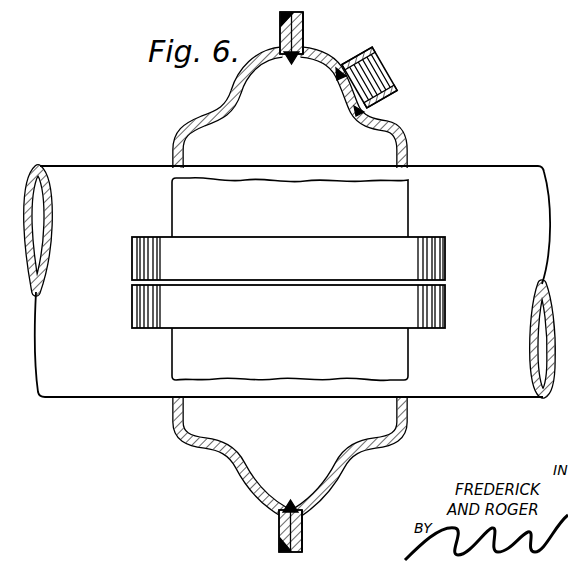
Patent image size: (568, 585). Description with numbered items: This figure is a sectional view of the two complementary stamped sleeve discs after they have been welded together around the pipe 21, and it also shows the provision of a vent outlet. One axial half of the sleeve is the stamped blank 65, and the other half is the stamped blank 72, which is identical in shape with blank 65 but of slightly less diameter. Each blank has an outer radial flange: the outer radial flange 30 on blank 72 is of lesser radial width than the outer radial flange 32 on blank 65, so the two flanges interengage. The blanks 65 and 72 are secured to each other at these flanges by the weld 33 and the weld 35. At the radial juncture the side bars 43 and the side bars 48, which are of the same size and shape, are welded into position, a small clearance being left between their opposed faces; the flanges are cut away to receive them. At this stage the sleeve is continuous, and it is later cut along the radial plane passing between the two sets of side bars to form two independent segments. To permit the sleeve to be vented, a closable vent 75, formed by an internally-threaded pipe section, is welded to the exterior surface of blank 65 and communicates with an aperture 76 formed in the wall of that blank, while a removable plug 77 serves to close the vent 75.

The pipe 21 is at (477, 178).
The outer radial flange 30 is at (280, 43).
The outer radial flange 32 is at (303, 16).
The weld 33 is at (284, 16).
The weld 35 is at (289, 62).
The side bars 43 is at (435, 270).
The side bars 48 is at (433, 325).
The stamped blank 65 is at (403, 128).
The stamped blank 72 is at (228, 105).
The closable vent 75 is at (352, 62).
The aperture 76 is at (340, 75).
The removable plug 77 is at (373, 73).